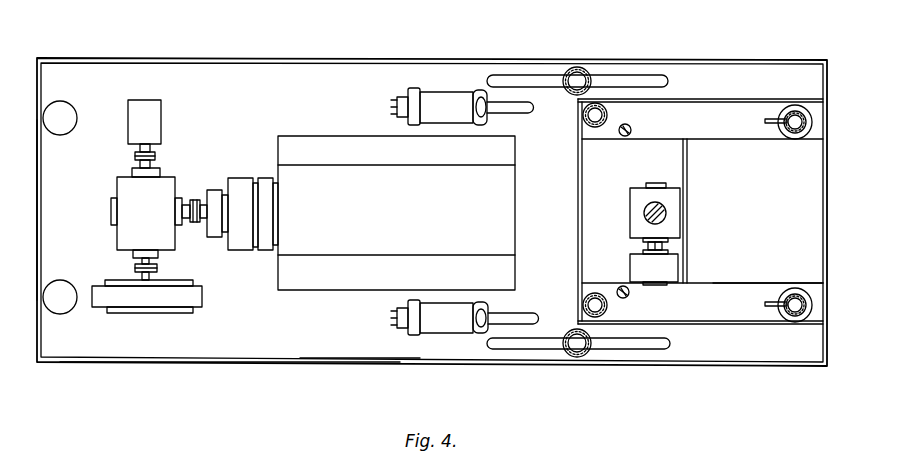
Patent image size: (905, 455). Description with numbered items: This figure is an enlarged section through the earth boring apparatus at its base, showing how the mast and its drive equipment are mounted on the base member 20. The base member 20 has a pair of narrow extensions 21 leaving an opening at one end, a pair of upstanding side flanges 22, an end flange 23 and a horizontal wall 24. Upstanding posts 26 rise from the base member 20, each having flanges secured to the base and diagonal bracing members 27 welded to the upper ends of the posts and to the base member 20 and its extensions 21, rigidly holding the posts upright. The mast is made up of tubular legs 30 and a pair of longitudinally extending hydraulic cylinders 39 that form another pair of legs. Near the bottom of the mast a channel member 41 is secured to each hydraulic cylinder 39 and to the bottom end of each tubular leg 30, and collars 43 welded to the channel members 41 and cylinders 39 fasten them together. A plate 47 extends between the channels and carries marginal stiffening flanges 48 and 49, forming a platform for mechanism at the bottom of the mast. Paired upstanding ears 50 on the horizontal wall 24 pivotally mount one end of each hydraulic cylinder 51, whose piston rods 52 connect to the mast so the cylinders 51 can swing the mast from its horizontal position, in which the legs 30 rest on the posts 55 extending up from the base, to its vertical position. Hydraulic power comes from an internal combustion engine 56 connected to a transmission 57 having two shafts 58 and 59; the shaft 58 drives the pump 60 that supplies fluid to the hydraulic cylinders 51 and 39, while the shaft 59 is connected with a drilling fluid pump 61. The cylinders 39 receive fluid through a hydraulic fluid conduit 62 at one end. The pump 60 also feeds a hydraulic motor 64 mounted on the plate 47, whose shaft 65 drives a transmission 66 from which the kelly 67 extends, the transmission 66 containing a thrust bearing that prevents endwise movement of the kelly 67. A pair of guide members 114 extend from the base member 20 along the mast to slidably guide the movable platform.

The base member 20 is at (350, 352).
The narrow extensions 21 is at (778, 78).
The upstanding side flanges 22 is at (357, 58).
The end flange 23 is at (40, 220).
The horizontal wall 24 is at (253, 333).
The upstanding posts 26 is at (590, 73).
The diagonal bracing members 27 is at (533, 78).
The tubular legs 30 is at (594, 127).
The hydraulic cylinders 39 is at (788, 138).
The channel member 41 is at (713, 293).
The collars 43 is at (805, 135).
The plate 47 is at (663, 162).
The marginal stiffening flange 48 is at (688, 177).
The marginal stiffening flange 49 is at (587, 182).
The paired upstanding ears 50 is at (400, 93).
The hydraulic cylinders 51 is at (447, 97).
The piston rods 52 is at (513, 110).
The posts 55 is at (68, 122).
The internal combustion engine 56 is at (318, 286).
The transmission 57 is at (127, 232).
The shaft 58 is at (150, 165).
The shaft 59 is at (152, 262).
The pump 60 is at (153, 120).
The drilling fluid pump 61 is at (193, 297).
The hydraulic fluid conduit 62 is at (765, 122).
The hydraulic motor 64 is at (637, 266).
The shaft 65 is at (670, 245).
The transmission 66 is at (637, 198).
The kelly 67 is at (667, 217).
The guide members 114 is at (632, 127).